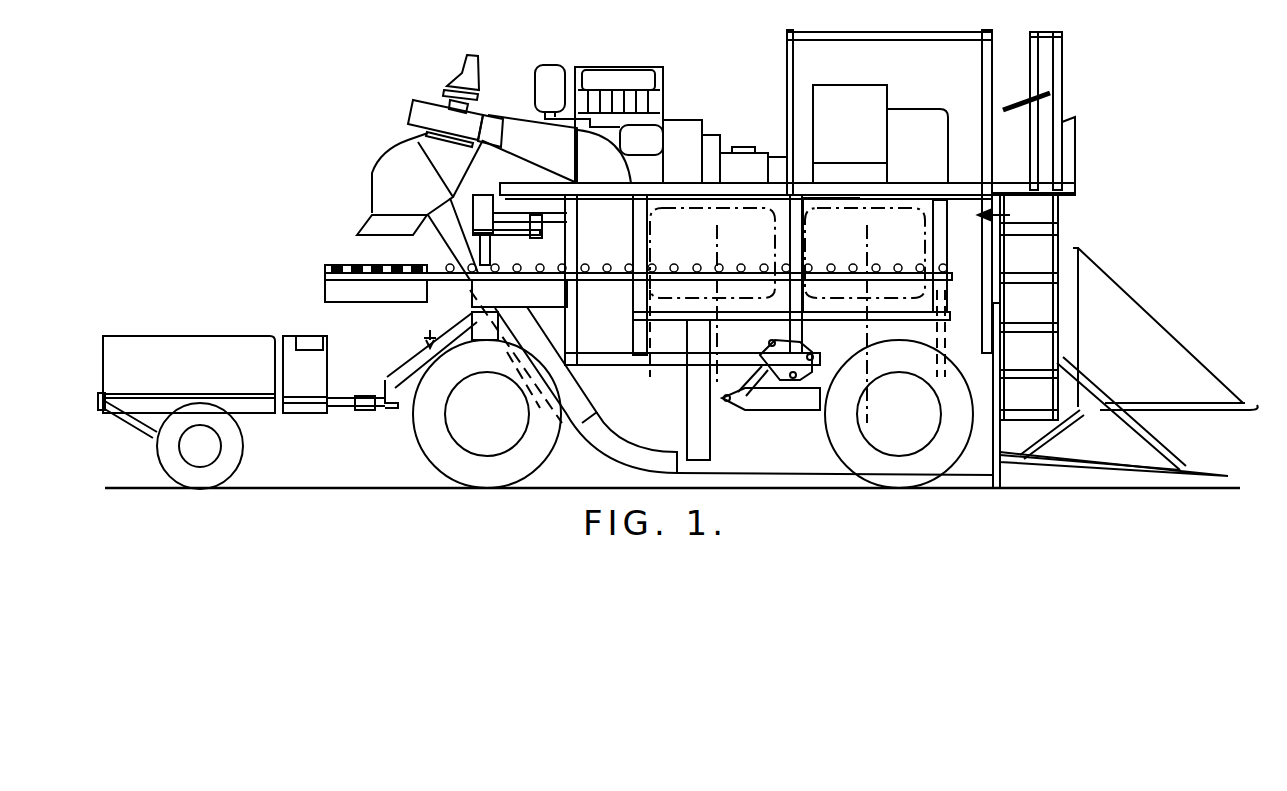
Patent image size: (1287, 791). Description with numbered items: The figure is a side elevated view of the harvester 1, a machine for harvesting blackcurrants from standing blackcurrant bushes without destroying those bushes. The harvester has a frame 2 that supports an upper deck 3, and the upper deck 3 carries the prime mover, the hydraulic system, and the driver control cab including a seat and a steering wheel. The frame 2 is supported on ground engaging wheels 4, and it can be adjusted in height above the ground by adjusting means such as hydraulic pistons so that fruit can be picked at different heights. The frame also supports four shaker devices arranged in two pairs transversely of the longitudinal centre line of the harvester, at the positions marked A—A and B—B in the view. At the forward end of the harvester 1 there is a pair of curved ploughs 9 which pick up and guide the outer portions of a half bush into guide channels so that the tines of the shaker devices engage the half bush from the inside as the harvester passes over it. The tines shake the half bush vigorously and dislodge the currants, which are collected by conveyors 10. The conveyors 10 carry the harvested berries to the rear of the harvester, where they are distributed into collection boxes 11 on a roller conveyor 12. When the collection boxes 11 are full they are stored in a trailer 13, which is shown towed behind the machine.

The harvester 1 is at (727, 100).
The frame 2 is at (1053, 222).
The upper deck 3 is at (748, 188).
The ground engaging wheels 4 is at (431, 452).
The curved ploughs 9 is at (1120, 447).
The conveyors 10 is at (755, 460).
The collection boxes 11 is at (338, 291).
The roller conveyor 12 is at (377, 262).
The trailer 13 is at (234, 340).